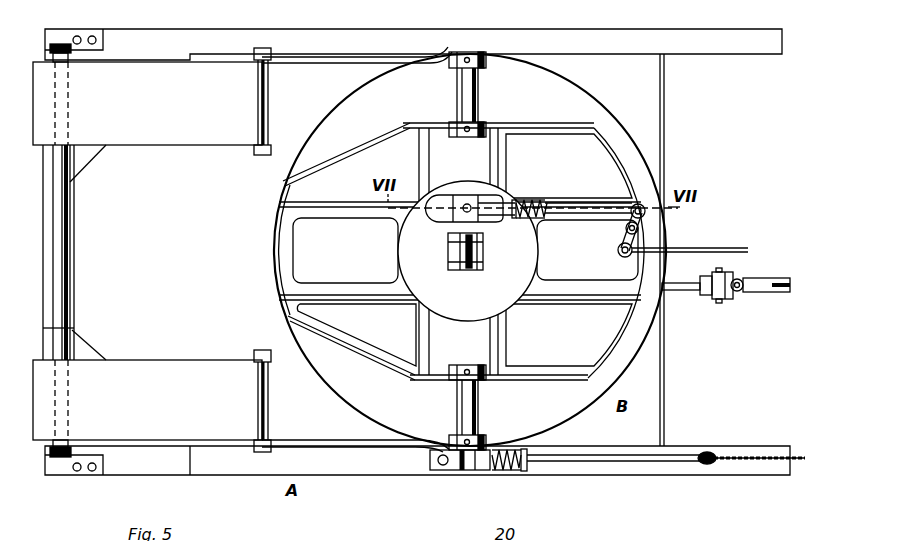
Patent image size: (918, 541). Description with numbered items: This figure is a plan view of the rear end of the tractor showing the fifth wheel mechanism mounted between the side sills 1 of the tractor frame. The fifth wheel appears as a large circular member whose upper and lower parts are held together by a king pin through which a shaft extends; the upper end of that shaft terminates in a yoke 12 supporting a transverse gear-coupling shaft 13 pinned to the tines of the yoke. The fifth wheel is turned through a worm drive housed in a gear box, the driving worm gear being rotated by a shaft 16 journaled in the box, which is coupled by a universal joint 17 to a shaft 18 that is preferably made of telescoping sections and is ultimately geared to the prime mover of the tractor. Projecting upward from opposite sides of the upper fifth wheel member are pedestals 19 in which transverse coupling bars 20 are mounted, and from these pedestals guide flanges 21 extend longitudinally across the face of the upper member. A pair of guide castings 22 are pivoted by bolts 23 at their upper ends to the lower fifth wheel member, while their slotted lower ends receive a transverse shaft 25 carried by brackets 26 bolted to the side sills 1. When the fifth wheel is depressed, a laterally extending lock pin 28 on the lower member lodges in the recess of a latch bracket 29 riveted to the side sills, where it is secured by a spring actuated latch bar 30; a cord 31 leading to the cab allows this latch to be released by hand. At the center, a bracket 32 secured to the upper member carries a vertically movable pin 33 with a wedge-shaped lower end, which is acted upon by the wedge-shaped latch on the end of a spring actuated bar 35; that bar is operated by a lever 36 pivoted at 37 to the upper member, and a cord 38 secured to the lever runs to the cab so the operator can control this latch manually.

The side sills 1 is at (670, 53).
The yoke 12 is at (477, 269).
The gear-coupling shaft 13 is at (484, 250).
The shaft 16 is at (676, 291).
The universal joint 17 is at (722, 299).
The shaft 18 is at (777, 293).
The pedestals 19 is at (484, 62).
The coupling bars 20 is at (457, 88).
The guide flanges 21 is at (413, 65).
The guide castings 22 is at (147, 251).
The bolts 23 is at (257, 100).
The transverse shaft 25 is at (72, 289).
The brackets 26 is at (69, 44).
The lock pin 28 is at (461, 471).
The latch bracket 29 is at (491, 473).
The latch bar 30 is at (587, 455).
The cord 31 is at (768, 455).
The bracket 32 is at (486, 197).
The pin 33 is at (464, 212).
The spring actuated bar 35 is at (576, 203).
The lever 36 is at (627, 239).
The pivot 37 is at (640, 230).
The cord 38 is at (700, 251).